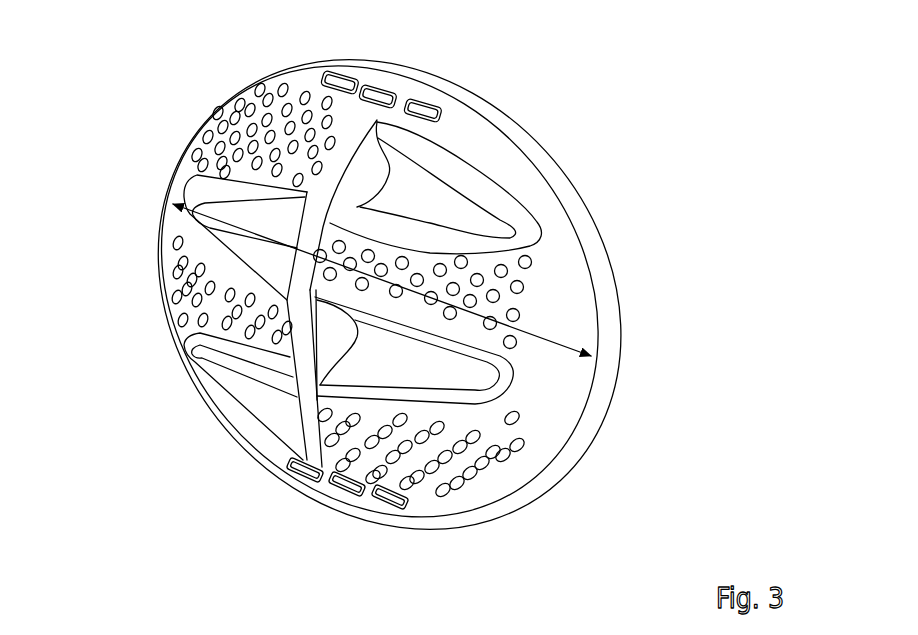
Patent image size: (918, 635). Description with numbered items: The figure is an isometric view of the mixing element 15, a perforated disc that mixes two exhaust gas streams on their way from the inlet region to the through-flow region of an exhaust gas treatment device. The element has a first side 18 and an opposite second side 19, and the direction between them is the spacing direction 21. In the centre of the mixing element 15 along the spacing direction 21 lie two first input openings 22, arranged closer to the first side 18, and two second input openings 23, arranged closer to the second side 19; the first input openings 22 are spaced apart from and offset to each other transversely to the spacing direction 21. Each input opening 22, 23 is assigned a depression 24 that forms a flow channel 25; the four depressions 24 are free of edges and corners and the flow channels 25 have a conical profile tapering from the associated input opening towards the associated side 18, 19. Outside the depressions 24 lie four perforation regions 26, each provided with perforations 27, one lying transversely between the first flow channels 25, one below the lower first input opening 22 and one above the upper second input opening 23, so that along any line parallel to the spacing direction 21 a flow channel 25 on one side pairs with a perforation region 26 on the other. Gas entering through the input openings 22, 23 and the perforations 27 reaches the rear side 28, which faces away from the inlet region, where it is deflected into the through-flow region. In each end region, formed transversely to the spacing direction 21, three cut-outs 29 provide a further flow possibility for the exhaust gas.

The mixing element 15 is at (672, 135).
The first side 18 is at (585, 378).
The second side 19 is at (163, 252).
The spacing direction 21 is at (590, 352).
The first input opening 22 is at (353, 261).
The second input opening 23 is at (298, 275).
The depression 24 is at (222, 207).
The flow channel 25 is at (220, 230).
The perforation region 26 is at (250, 86).
The perforation 27 is at (226, 112).
The rear side 28 is at (537, 143).
The cut-out 29 is at (424, 110).